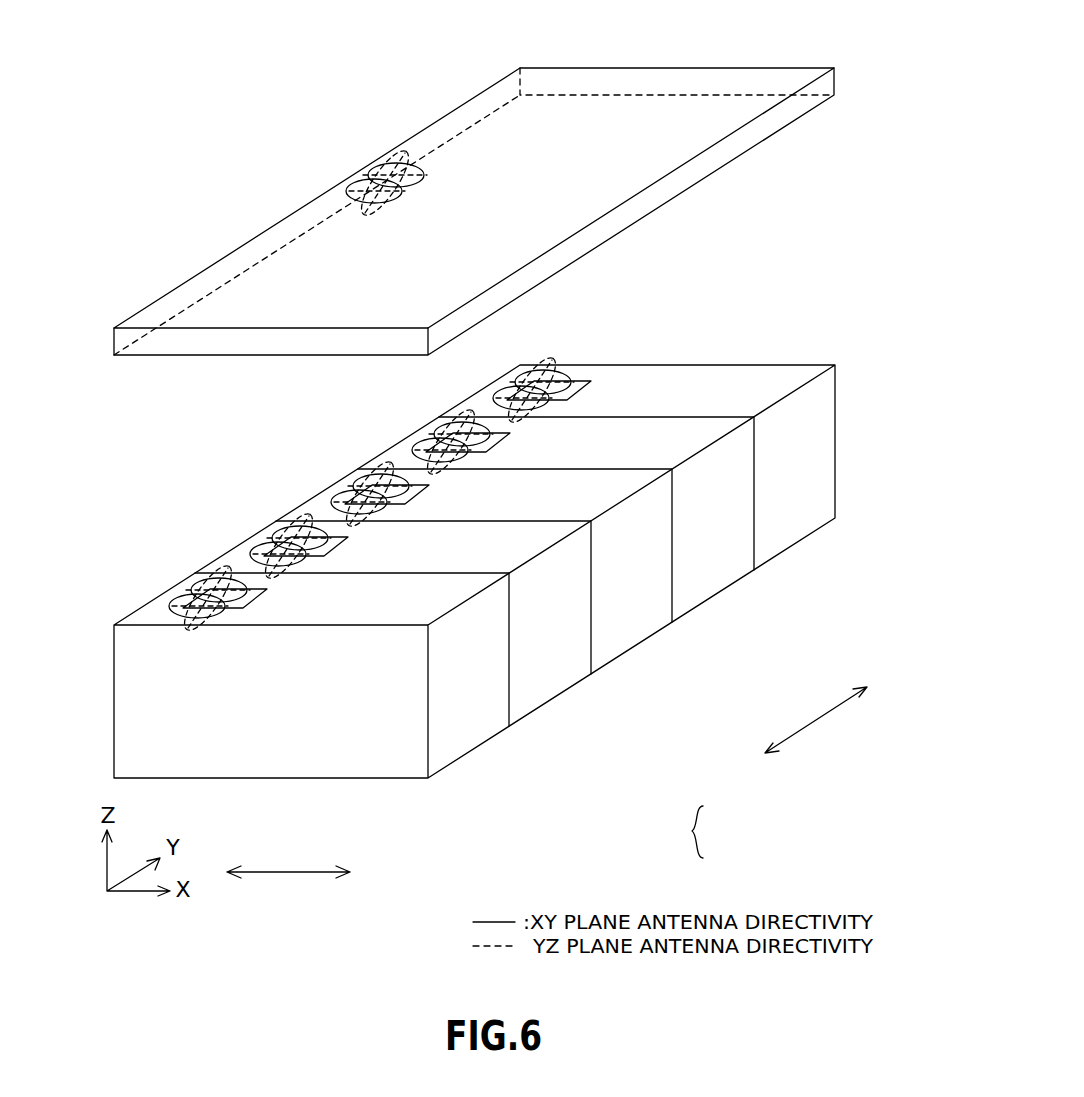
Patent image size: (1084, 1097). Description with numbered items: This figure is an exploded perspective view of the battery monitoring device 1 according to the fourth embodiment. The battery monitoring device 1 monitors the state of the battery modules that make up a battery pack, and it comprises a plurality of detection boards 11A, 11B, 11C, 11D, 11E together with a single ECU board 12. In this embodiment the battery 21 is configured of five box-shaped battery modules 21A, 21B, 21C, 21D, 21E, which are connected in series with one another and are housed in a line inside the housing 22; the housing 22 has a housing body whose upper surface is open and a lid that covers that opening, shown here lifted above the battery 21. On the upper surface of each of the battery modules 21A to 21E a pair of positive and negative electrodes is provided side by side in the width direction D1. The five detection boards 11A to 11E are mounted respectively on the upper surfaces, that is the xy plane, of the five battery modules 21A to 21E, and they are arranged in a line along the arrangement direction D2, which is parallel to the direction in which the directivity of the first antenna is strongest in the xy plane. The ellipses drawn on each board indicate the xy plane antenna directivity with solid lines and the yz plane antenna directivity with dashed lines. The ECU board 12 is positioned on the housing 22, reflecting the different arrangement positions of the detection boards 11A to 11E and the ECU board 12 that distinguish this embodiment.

The battery monitoring device 1 is at (746, 831).
The detection board 11A is at (582, 383).
The detection board 11B is at (437, 417).
The detection board 11C is at (355, 468).
The detection board 11D is at (277, 520).
The detection board 11E is at (203, 572).
The ECU board 12 is at (425, 142).
The battery 21 is at (506, 555).
The battery module 21A is at (765, 385).
The battery module 21B is at (675, 440).
The battery module 21C is at (598, 494).
The battery module 21D is at (516, 545).
The battery module 21E is at (436, 597).
The housing 22 is at (793, 82).
The width direction D1 is at (288, 873).
The arrangement direction D2 is at (823, 720).